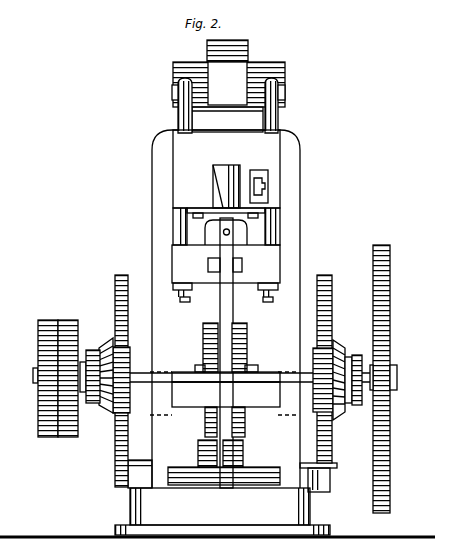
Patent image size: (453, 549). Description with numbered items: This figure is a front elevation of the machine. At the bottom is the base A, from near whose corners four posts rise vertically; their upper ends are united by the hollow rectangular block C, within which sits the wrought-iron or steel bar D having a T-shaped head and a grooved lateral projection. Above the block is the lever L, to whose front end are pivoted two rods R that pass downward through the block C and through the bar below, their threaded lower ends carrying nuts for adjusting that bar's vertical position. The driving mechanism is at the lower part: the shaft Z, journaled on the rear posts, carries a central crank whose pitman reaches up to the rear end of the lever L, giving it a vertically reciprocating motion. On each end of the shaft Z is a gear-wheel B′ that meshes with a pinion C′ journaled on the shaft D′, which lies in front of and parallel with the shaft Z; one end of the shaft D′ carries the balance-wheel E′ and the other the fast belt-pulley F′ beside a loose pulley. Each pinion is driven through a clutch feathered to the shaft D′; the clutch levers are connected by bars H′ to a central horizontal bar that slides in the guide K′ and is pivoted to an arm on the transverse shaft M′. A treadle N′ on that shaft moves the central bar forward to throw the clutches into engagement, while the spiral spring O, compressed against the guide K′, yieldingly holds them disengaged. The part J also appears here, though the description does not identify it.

The base A is at (222, 511).
The gear-wheel B′ is at (153, 257).
The block C is at (226, 169).
The pinion C′ is at (129, 362).
The bar D is at (214, 183).
The shaft D′ is at (398, 380).
The balance-wheel E′ is at (387, 334).
The fast belt-pulley F′ is at (55, 437).
The bar H′ is at (180, 378).
The rod J is at (220, 306).
The guide K′ is at (226, 394).
The lever L is at (229, 86).
The shaft M′ is at (266, 464).
The foot-lever or treadle N′ is at (330, 470).
The spiral spring O is at (226, 273).
The rods R is at (178, 113).
The shaft Z is at (247, 346).